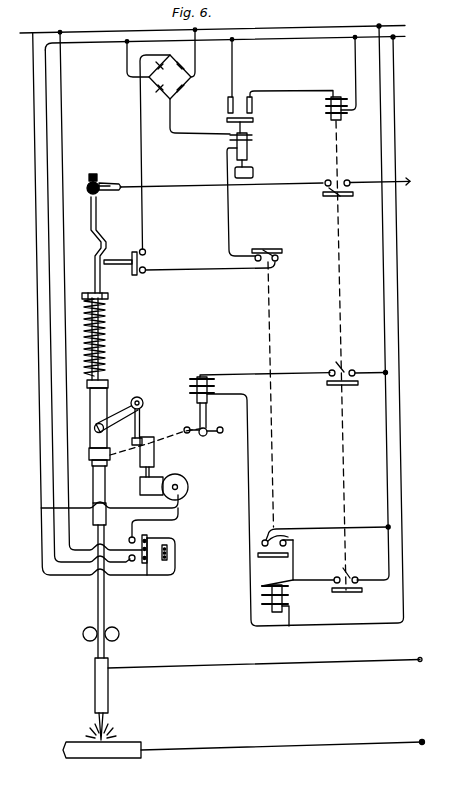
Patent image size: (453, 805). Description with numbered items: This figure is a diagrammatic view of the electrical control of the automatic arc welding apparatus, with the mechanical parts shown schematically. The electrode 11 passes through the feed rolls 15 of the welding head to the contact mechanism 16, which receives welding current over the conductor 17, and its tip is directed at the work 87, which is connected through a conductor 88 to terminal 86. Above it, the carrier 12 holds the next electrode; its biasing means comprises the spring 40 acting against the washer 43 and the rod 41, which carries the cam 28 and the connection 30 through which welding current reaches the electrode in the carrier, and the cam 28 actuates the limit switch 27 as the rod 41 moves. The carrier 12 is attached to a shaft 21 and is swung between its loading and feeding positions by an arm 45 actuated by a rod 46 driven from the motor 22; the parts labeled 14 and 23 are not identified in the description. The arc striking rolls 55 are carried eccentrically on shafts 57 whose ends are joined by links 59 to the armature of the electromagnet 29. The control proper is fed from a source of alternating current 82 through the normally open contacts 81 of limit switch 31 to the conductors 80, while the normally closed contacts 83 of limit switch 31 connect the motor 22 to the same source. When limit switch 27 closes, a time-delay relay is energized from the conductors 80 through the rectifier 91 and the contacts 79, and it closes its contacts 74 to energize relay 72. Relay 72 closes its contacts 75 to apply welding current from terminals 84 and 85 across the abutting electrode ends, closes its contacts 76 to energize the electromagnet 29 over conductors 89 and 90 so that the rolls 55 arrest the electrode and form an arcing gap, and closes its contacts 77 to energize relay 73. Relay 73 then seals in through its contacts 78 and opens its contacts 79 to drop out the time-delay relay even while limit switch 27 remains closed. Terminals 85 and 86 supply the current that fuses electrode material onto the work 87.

The electrode 11 is at (97, 593).
The electrode carrier 12 is at (102, 395).
The machine frame 14 is at (0, 376).
The feed rolls 15 is at (109, 629).
The contact mechanism 16 is at (108, 691).
The conductor 17 is at (221, 667).
The shaft 21 is at (250, 187).
The motor 22 is at (188, 487).
The solenoid 23 is at (158, 457).
The limit switch 27 is at (133, 252).
The cam 28 is at (101, 240).
The electromagnet 29 is at (256, 390).
The connection 30 is at (96, 181).
The limit switch 31 is at (146, 566).
The spring 40 is at (103, 340).
The rod 41 is at (92, 271).
The washer 43 is at (106, 296).
The arm 45 is at (139, 401).
The rod 46 is at (140, 420).
The arc striking rolls 55 is at (90, 452).
The shafts 57 is at (166, 437).
The links 59 is at (208, 427).
The relay 72 is at (366, 156).
The relay 73 is at (300, 500).
The contacts 74 is at (253, 104).
The contacts 75 is at (338, 196).
The contacts 76 is at (335, 369).
The contacts 77 is at (352, 578).
The contacts 78 is at (288, 540).
The contacts 79 is at (266, 254).
The conductors 80 is at (306, 30).
The normally open contacts 81 is at (149, 545).
The source of alternating current supply 82 is at (26, 37).
The normally closed contacts 83 is at (129, 540).
The terminal 84 is at (411, 180).
The terminal 85 is at (418, 662).
The terminal 86 is at (420, 742).
The work 87 is at (100, 758).
The conductor 88 is at (262, 746).
The conductor 89 is at (385, 298).
The conductor 90 is at (399, 330).
The rectifier 91 is at (199, 110).